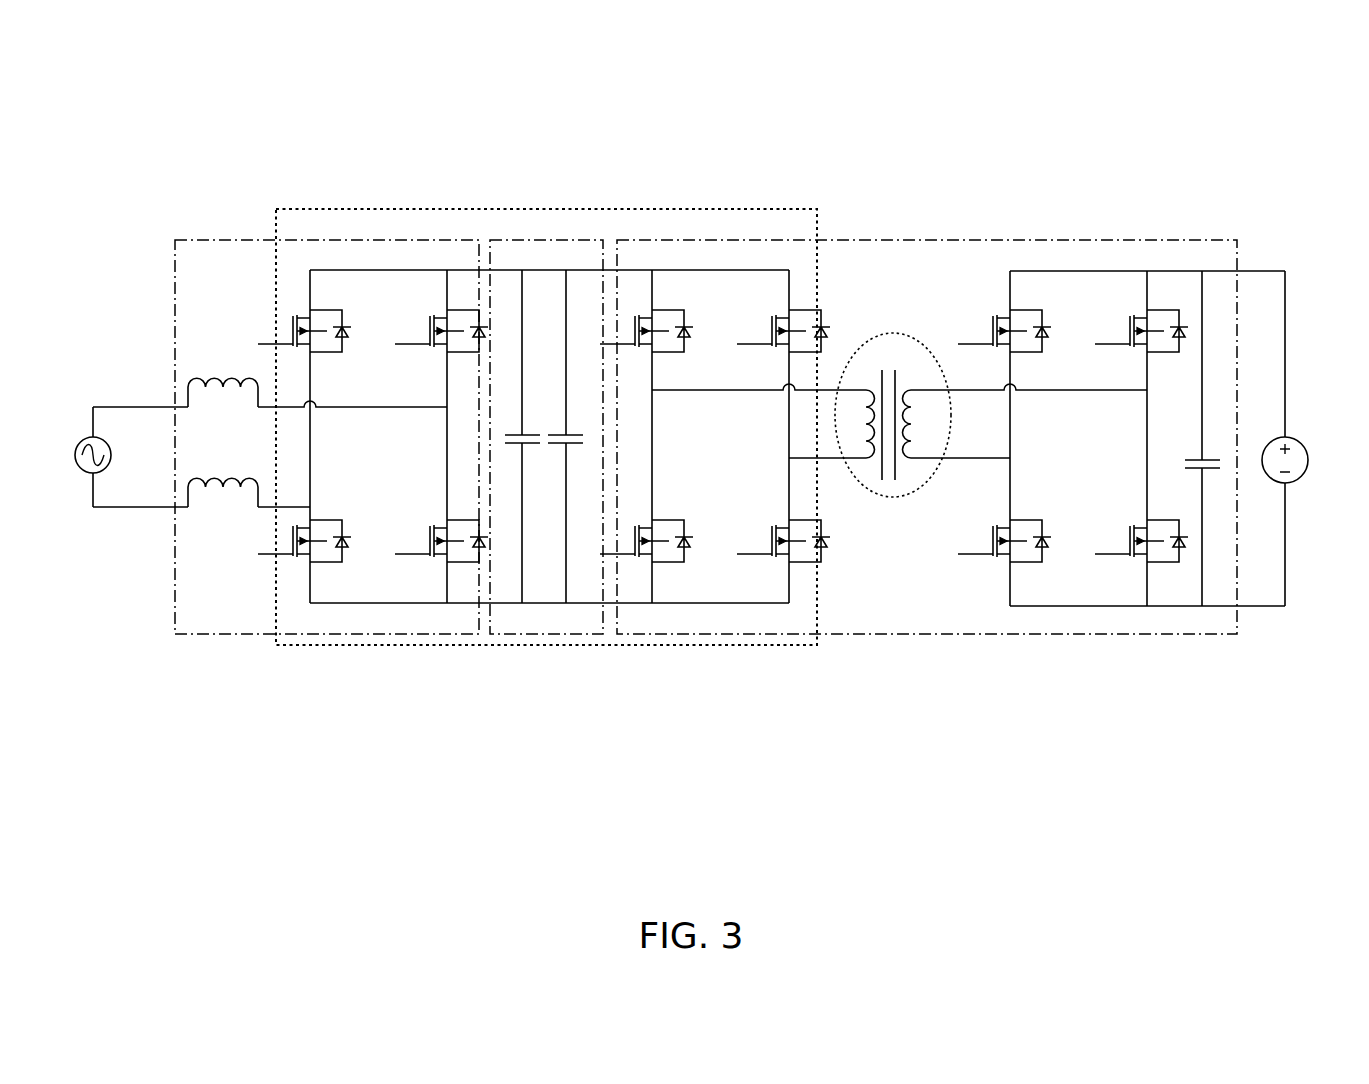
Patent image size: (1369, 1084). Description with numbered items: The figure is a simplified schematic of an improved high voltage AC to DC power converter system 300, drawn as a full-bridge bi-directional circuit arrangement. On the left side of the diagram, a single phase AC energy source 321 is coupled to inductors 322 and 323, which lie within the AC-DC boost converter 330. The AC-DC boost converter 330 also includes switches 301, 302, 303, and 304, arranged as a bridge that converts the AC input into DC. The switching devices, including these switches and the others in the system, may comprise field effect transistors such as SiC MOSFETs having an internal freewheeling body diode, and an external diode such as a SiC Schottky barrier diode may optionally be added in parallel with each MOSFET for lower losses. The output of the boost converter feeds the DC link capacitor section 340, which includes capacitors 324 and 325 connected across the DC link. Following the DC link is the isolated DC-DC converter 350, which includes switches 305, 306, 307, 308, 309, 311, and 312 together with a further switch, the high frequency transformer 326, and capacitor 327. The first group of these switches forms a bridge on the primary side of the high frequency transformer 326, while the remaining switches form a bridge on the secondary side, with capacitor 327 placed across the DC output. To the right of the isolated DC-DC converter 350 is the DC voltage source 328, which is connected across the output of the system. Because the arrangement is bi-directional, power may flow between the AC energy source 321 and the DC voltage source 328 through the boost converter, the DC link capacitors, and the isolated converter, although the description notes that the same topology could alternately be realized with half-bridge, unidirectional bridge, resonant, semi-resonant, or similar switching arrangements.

The power converter system 300 is at (1142, 150).
The switch 301 is at (309, 318).
The switch 302 is at (441, 318).
The switch 303 is at (309, 530).
The switch 304 is at (441, 530).
The switch 305 is at (651, 318).
The switch 306 is at (783, 318).
The switch 307 is at (651, 530).
The switch 308 is at (783, 530).
The switch 309 is at (1010, 318).
The switch 311 is at (1010, 530).
The switch 312 is at (1141, 530).
The single phase AC energy source 321 is at (113, 457).
The inductor 322 is at (223, 375).
The inductor 323 is at (223, 509).
The capacitor 324 is at (535, 430).
The capacitor 325 is at (562, 448).
The high frequency transformer 326 is at (926, 488).
The capacitor 327 is at (1189, 438).
The DC voltage source 328 is at (1313, 438).
The AC-DC boost converter 330 is at (228, 638).
The DC link capacitor section 340 is at (493, 638).
The isolated DC-DC converter 350 is at (847, 638).